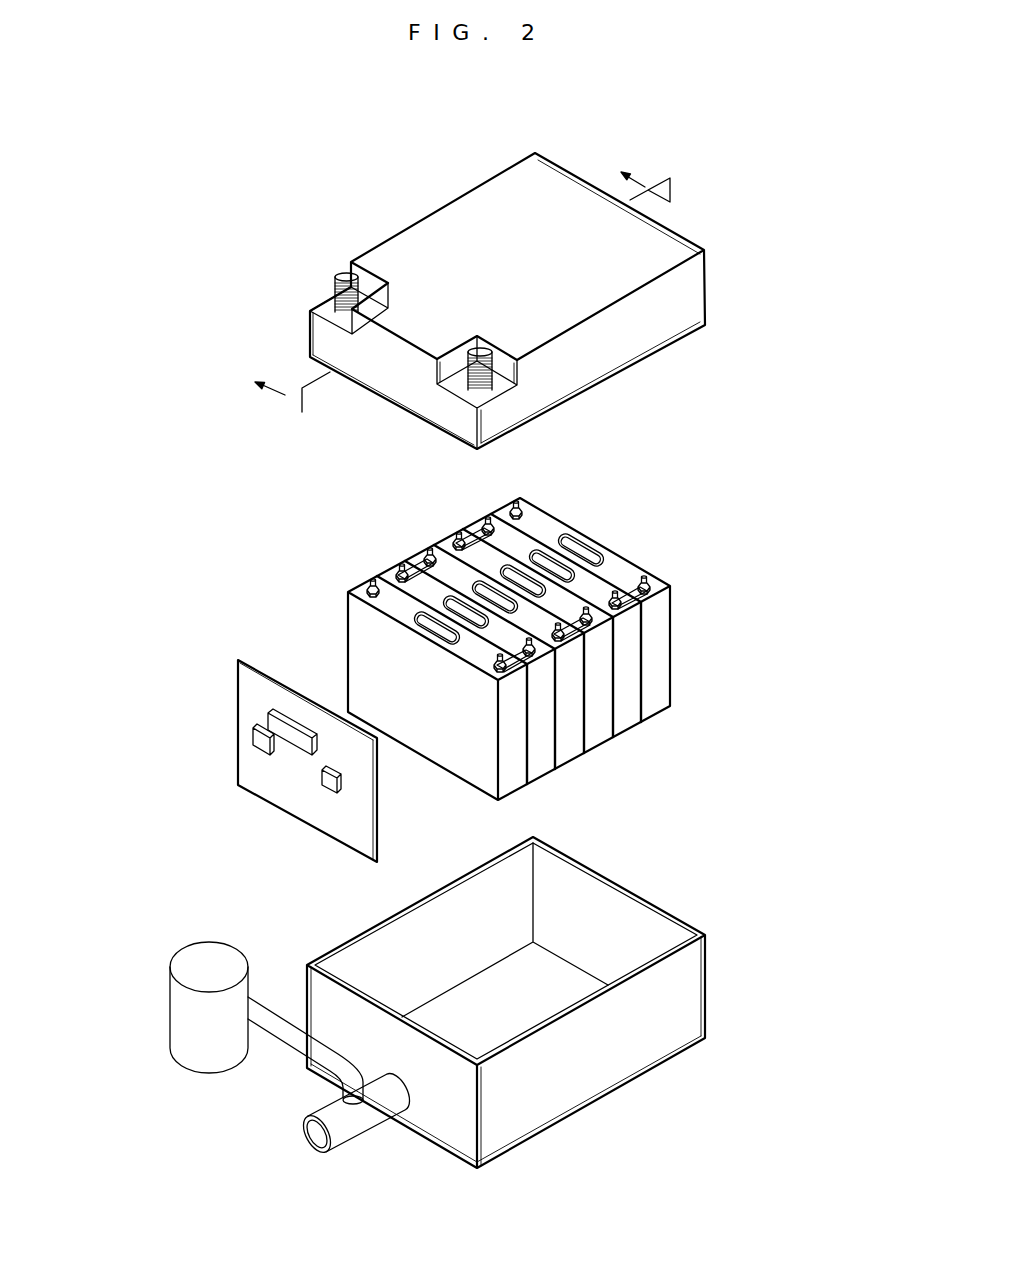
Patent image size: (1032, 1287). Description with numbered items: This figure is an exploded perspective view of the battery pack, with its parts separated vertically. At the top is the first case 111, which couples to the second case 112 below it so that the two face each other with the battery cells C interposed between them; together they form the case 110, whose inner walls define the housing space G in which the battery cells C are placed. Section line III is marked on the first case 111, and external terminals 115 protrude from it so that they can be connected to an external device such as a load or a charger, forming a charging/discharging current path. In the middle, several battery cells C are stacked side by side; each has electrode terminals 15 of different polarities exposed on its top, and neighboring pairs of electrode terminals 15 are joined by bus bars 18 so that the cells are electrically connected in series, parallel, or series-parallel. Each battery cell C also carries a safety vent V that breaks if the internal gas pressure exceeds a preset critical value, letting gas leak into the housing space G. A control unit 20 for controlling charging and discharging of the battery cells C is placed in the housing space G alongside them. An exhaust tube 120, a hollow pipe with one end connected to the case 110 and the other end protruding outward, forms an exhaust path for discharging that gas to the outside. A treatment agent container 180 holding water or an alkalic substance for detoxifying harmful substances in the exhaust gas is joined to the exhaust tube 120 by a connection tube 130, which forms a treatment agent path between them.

The first case 111 is at (448, 222).
The external terminals 115 is at (345, 275).
The section line III is at (457, 279).
The battery cells C is at (528, 635).
The safety vent V is at (577, 545).
The electrode terminals 15 is at (372, 582).
The bus bars 18 is at (417, 555).
The control unit 20 is at (240, 660).
The case 110 is at (559, 1009).
The second case 112 is at (702, 988).
The housing space G is at (455, 948).
The treatment agent container 180 is at (200, 948).
The connection tube 130 is at (283, 1040).
The exhaust tube 120 is at (358, 1128).